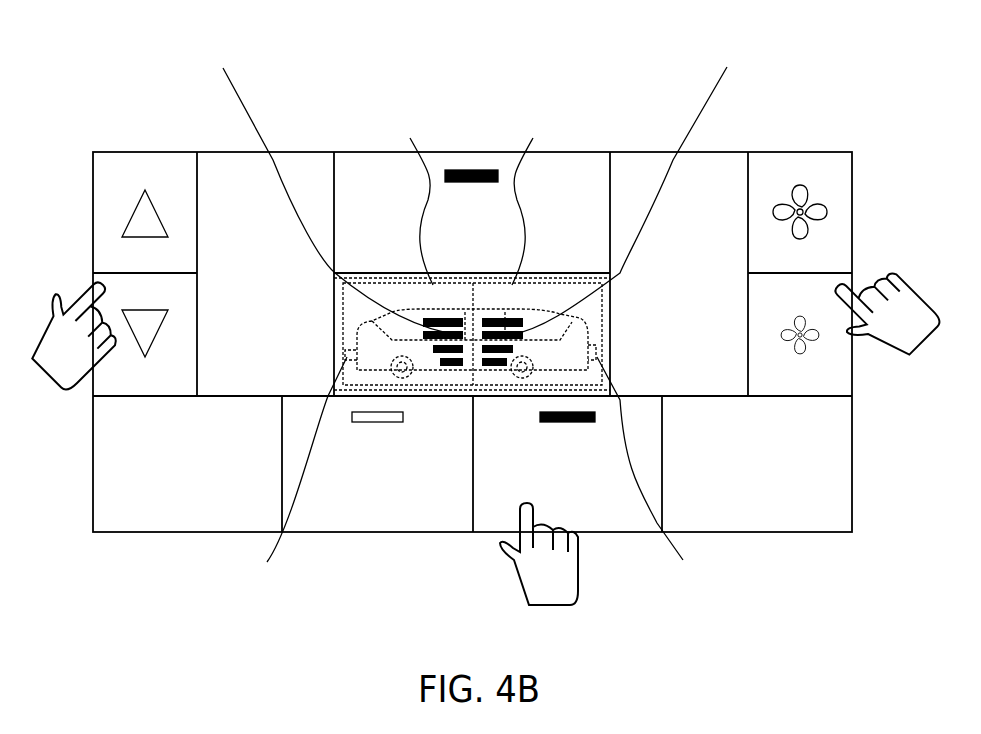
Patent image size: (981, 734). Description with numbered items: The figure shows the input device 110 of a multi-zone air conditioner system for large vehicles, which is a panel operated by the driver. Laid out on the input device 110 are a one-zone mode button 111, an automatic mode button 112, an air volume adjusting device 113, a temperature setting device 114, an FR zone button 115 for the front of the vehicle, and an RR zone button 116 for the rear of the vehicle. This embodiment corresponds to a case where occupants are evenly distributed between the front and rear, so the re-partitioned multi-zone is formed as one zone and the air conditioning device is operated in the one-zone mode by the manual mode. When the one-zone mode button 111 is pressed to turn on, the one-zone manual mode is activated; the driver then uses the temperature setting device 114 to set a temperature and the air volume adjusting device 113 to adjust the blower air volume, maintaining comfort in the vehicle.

The input device 110 is at (477, 315).
The 1-zone mode button 111 is at (490, 523).
The automatic mode button 112 is at (387, 523).
The air volume adjusting device 113 is at (838, 162).
The temperature setting device 114 is at (108, 162).
The FR zone button 115 is at (208, 162).
The RR zone button 116 is at (735, 162).